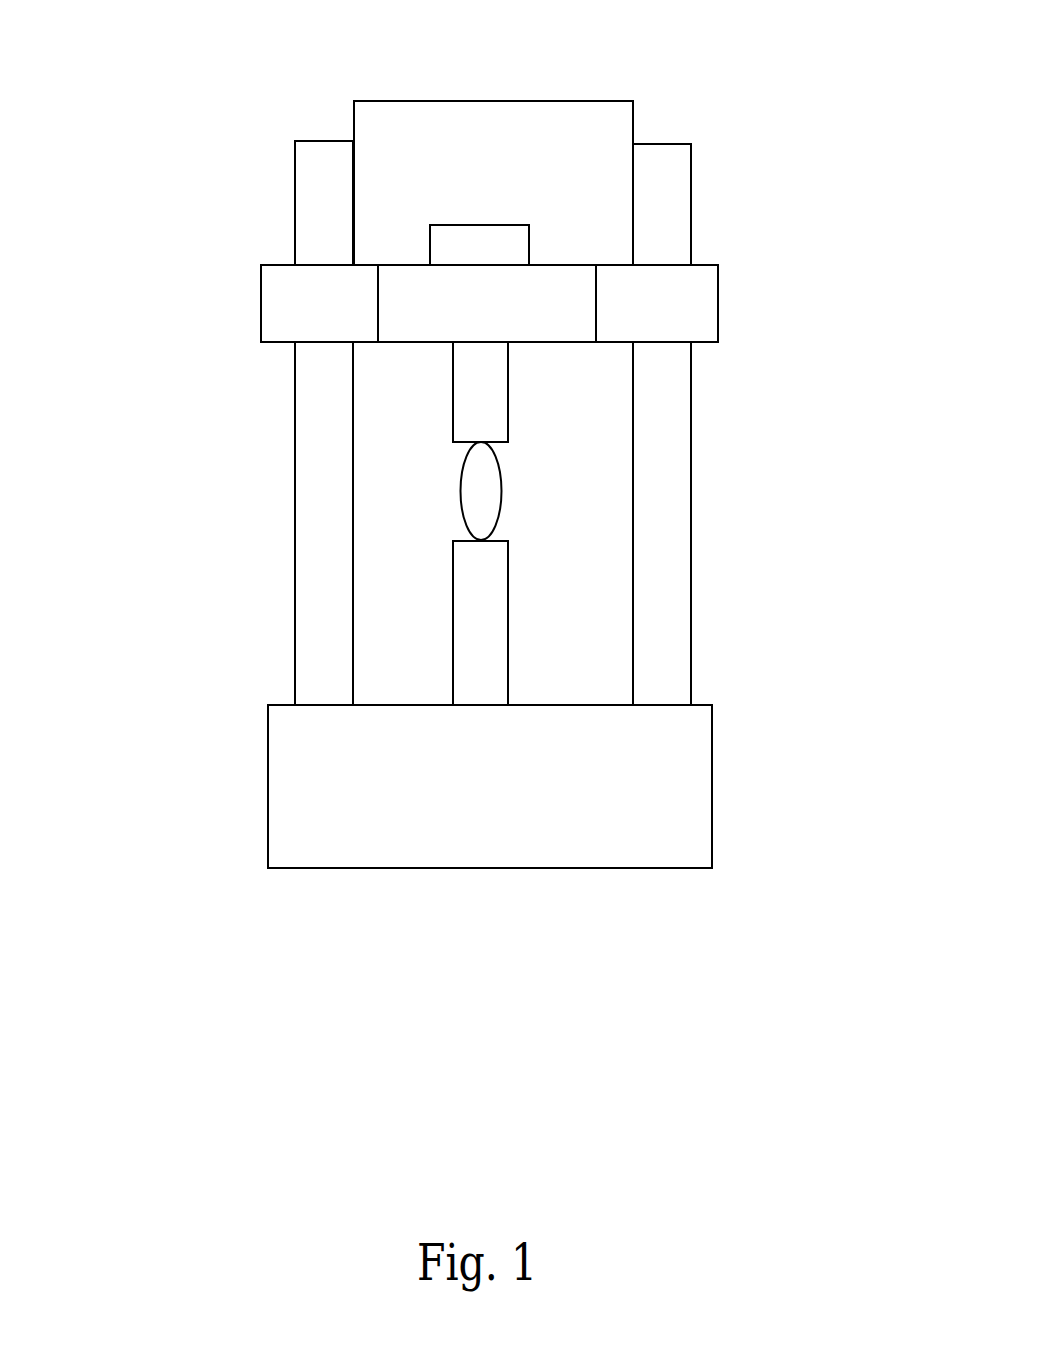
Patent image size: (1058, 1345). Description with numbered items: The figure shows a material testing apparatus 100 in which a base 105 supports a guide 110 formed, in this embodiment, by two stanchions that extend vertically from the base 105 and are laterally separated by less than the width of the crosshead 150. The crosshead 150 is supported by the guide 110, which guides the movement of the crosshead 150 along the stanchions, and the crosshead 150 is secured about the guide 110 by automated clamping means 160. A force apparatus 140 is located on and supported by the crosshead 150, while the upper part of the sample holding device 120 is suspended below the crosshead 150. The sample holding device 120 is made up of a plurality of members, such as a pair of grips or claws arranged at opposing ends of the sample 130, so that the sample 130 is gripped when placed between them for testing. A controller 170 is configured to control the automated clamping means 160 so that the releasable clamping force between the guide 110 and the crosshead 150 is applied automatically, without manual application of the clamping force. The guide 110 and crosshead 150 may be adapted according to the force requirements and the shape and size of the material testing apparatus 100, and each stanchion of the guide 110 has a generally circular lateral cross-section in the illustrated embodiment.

The material testing apparatus 100 is at (473, 525).
The base 105 is at (678, 817).
The guide means 110 is at (654, 679).
The sample holding device 120 is at (479, 592).
The sample 130 is at (488, 501).
The force apparatus 140 is at (531, 134).
The crosshead 150 is at (505, 316).
The automated clamping means 160 is at (619, 284).
The controller 170 is at (496, 242).